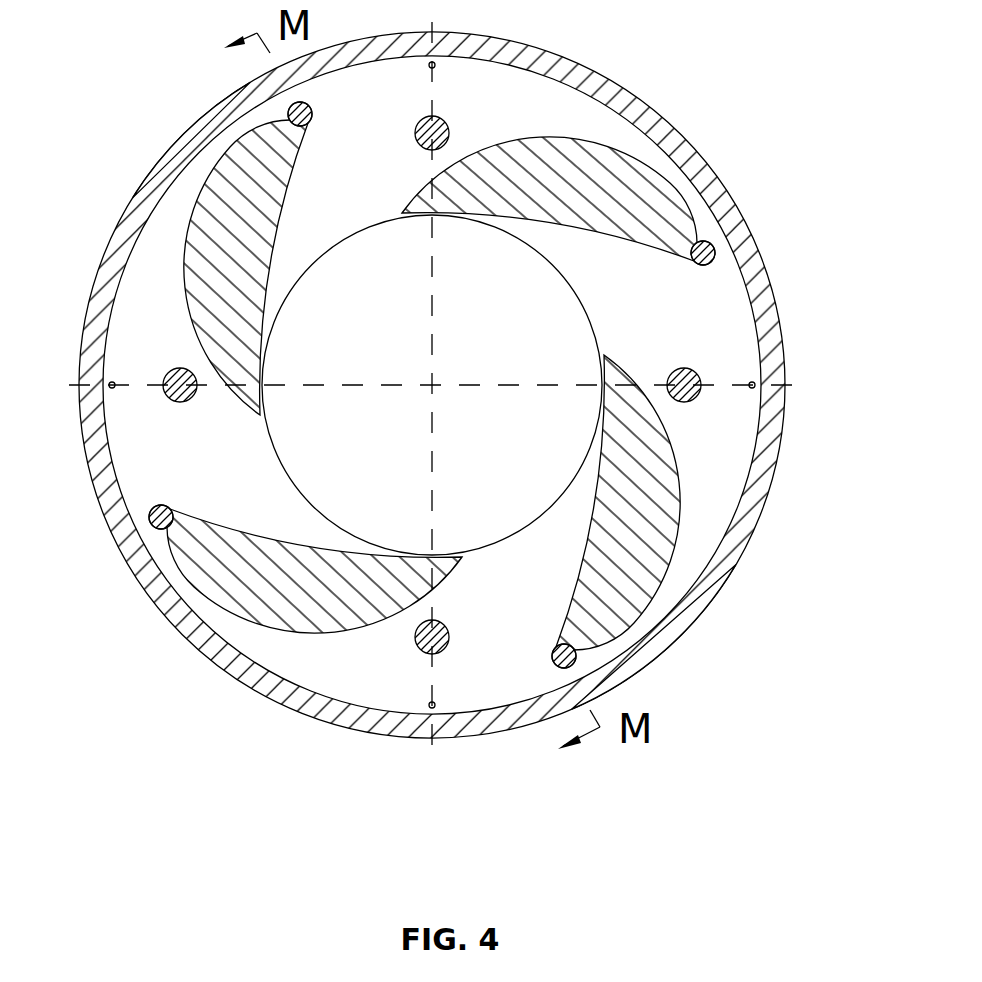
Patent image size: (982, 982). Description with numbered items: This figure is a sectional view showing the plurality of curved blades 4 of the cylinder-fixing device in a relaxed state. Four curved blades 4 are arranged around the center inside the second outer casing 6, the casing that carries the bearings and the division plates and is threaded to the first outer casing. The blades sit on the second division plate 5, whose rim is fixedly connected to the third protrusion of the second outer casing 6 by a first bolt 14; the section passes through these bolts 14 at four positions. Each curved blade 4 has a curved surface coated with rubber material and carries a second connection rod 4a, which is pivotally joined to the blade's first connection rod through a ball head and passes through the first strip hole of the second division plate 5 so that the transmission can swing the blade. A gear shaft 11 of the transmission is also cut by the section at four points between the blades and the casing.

The curved blade 4 is at (200, 305).
The second connection rod 4a is at (714, 250).
The second division plate 5 is at (553, 117).
The second outer casing 6 is at (205, 132).
The gear shaft 11 is at (168, 392).
The first bolt 14 is at (756, 388).